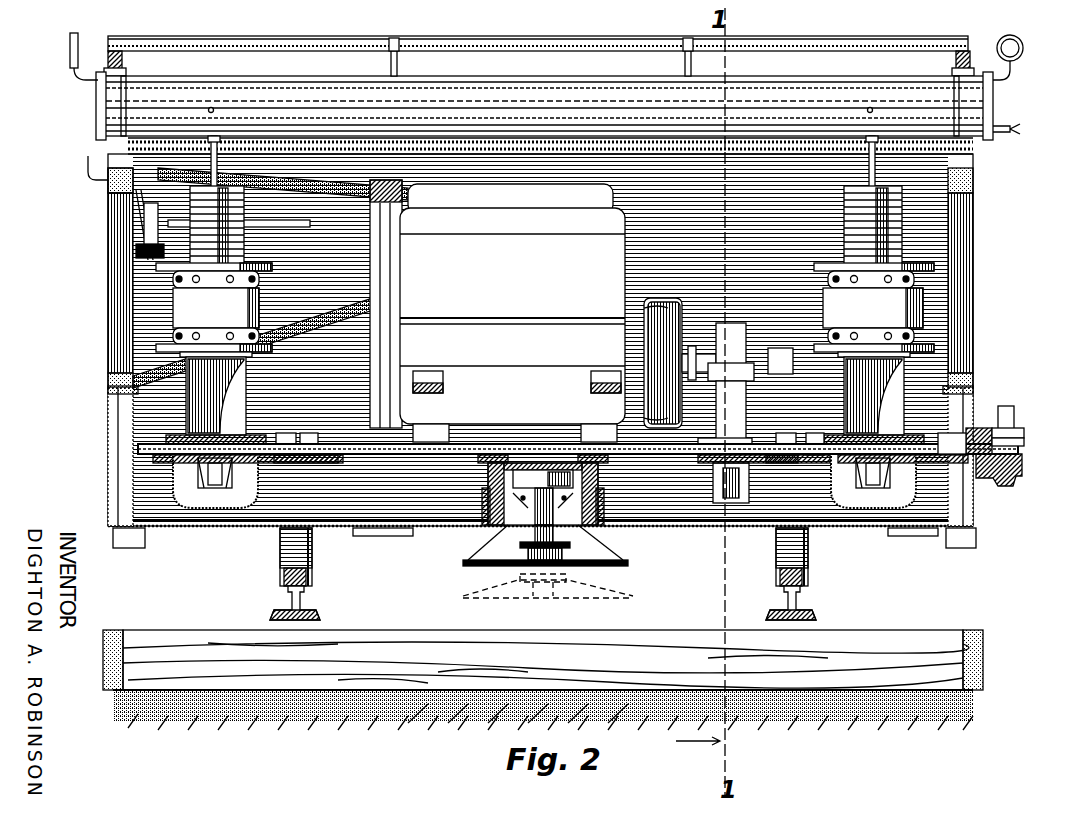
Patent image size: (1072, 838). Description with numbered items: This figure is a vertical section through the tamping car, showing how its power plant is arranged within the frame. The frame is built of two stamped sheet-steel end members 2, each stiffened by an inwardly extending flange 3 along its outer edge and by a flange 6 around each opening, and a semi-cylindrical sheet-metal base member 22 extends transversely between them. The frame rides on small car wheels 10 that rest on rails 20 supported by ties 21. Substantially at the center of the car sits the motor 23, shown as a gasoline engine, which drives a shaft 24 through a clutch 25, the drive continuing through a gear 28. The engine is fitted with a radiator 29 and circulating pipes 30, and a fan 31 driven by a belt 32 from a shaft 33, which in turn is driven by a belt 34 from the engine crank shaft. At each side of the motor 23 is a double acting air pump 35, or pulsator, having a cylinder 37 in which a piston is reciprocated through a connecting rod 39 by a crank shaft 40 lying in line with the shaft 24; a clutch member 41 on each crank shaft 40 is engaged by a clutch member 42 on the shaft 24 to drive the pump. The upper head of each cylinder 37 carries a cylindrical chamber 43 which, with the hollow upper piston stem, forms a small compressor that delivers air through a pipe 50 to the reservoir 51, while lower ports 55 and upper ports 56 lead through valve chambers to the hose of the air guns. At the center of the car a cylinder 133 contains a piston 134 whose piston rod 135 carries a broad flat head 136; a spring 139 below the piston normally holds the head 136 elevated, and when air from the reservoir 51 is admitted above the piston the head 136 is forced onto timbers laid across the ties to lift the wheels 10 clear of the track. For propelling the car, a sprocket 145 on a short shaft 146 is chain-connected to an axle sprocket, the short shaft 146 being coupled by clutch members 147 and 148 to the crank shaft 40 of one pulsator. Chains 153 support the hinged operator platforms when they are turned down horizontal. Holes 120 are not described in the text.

The end member 2 is at (100, 513).
The inwardly extending flange 3 is at (122, 542).
The inwardly extending flange 6 is at (120, 384).
The car wheel 10 is at (302, 575).
The rail 20 is at (282, 604).
The tie 21 is at (155, 624).
The base member 22 is at (368, 530).
The motor 23 is at (468, 285).
The shaft 24 is at (564, 438).
The clutch 25 is at (650, 300).
The gear 28 is at (724, 522).
The radiator 29 is at (105, 177).
The circulating pipe 30 is at (380, 262).
The fan 31 is at (130, 206).
The belt 32 is at (136, 222).
The shaft 33 is at (300, 214).
The belt 34 is at (370, 172).
The double acting air pump 35 is at (196, 380).
The cylinder 37 is at (178, 296).
The connecting rod 39 is at (205, 524).
The crank shaft 40 is at (178, 528).
The clutch member 41 is at (280, 456).
The clutch member 42 is at (298, 456).
The cylindrical chamber 43 is at (160, 254).
The pipe 50 is at (214, 138).
The reservoir 51 is at (135, 93).
The lower port 55 is at (126, 378).
The upper port 56 is at (224, 268).
The hole 120 is at (203, 99).
The cylinder 133 is at (482, 520).
The piston 134 is at (516, 468).
The piston rod 135 is at (505, 538).
The head 136 is at (598, 566).
The spring 139 is at (568, 520).
The sprocket 145 is at (1002, 416).
The short shaft 146 is at (1010, 444).
The clutch member 147 is at (978, 470).
The clutch member 148 is at (966, 420).
The chain 153 is at (392, 54).